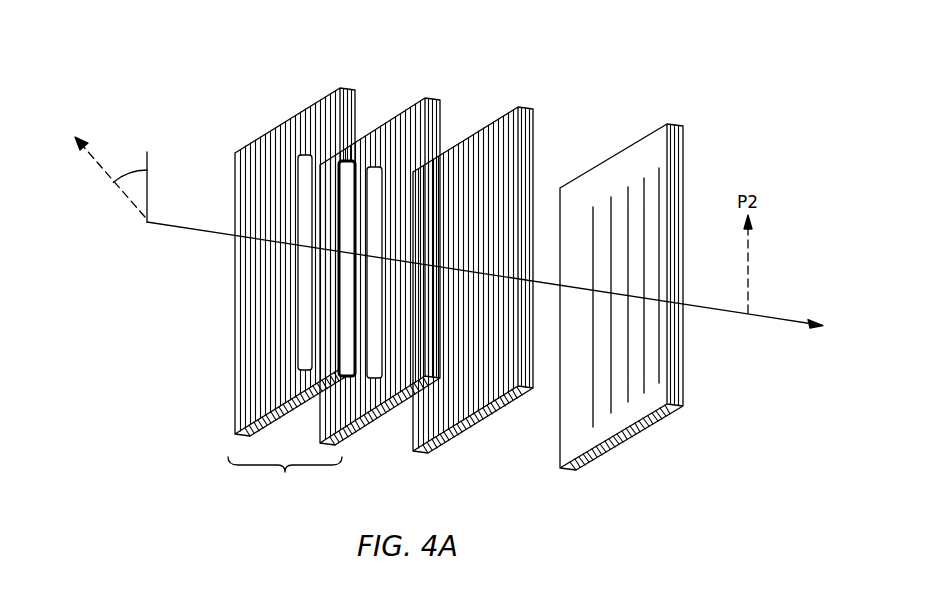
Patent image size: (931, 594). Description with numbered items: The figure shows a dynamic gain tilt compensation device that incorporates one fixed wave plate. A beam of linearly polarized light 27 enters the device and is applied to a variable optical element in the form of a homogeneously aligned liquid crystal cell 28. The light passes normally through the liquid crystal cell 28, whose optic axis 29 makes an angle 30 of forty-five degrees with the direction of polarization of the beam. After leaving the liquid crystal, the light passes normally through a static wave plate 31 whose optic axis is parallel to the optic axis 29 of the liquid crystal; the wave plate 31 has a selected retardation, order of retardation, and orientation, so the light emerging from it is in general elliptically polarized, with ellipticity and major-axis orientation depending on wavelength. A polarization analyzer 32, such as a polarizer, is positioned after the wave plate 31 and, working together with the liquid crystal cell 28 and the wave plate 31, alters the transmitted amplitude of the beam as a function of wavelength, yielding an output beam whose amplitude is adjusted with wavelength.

The beam of linearly polarized light 27 is at (122, 193).
The liquid crystal cell 28 is at (438, 77).
The optic axis 29 is at (305, 313).
The angle 30 is at (130, 170).
The static wave plate 31 is at (515, 107).
The polarization analyzer 32 is at (667, 125).